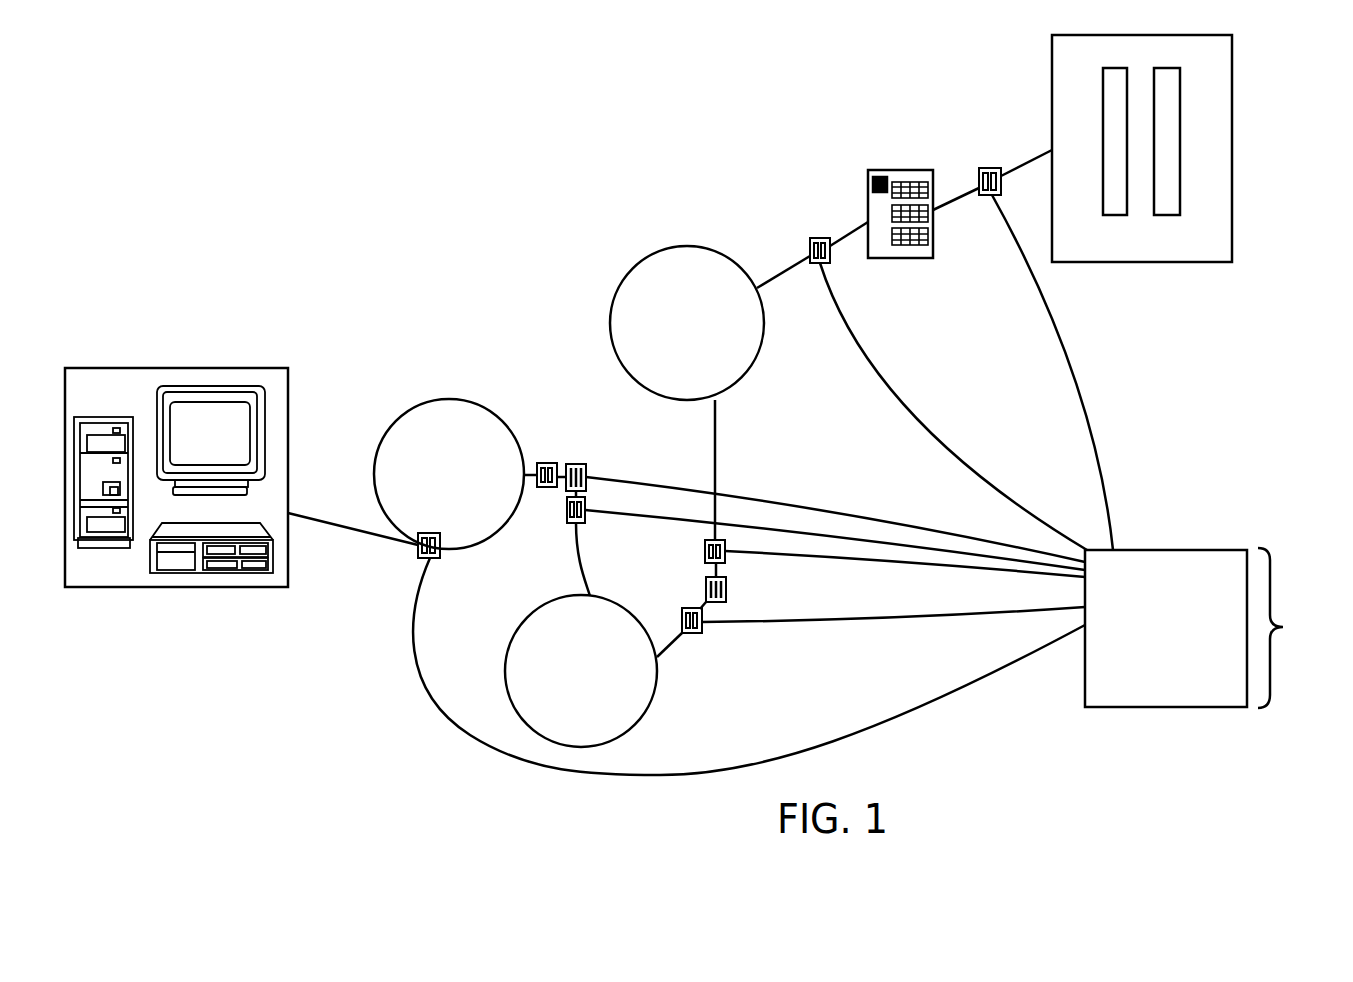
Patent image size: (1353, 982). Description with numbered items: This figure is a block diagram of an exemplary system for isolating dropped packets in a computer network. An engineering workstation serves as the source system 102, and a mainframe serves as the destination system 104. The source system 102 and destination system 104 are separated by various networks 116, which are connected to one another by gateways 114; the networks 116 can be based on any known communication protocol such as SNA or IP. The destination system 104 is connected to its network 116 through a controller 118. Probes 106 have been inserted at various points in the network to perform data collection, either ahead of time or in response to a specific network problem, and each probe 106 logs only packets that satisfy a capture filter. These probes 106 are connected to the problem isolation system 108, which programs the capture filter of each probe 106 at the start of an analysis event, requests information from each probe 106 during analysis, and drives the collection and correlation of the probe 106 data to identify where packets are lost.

The source system 102 is at (205, 368).
The destination system 104 is at (1212, 192).
The probe 106 is at (420, 558).
The problem isolation system 108 is at (1208, 628).
The gateway 114 is at (587, 470).
The network 116 is at (390, 424).
The controller 118 is at (925, 170).